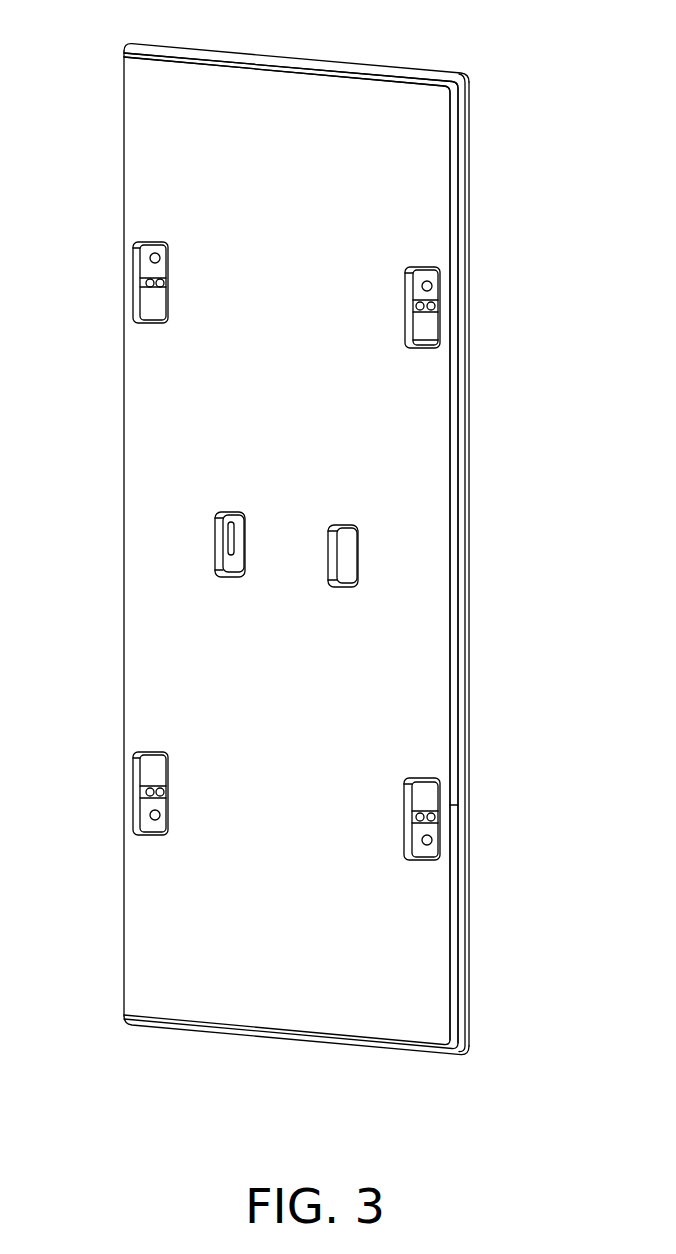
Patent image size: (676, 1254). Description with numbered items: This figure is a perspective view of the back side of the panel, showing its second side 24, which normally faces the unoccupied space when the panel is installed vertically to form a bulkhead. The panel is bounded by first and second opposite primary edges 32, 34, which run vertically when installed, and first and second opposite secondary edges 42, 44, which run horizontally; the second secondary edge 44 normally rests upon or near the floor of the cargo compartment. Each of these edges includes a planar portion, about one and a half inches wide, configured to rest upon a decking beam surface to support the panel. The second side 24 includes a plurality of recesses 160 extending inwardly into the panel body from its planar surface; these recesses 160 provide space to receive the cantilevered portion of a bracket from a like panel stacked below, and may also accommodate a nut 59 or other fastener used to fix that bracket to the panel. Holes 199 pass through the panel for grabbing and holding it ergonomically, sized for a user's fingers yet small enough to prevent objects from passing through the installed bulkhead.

The second side 24 is at (418, 175).
The first primary edge 32 is at (472, 638).
The second primary edge 34 is at (124, 605).
The first secondary edge 42 is at (356, 72).
The second secondary edge 44 is at (346, 1039).
The nut 59 is at (431, 284).
The recesses 160 is at (428, 338).
The holes 199 is at (352, 566).